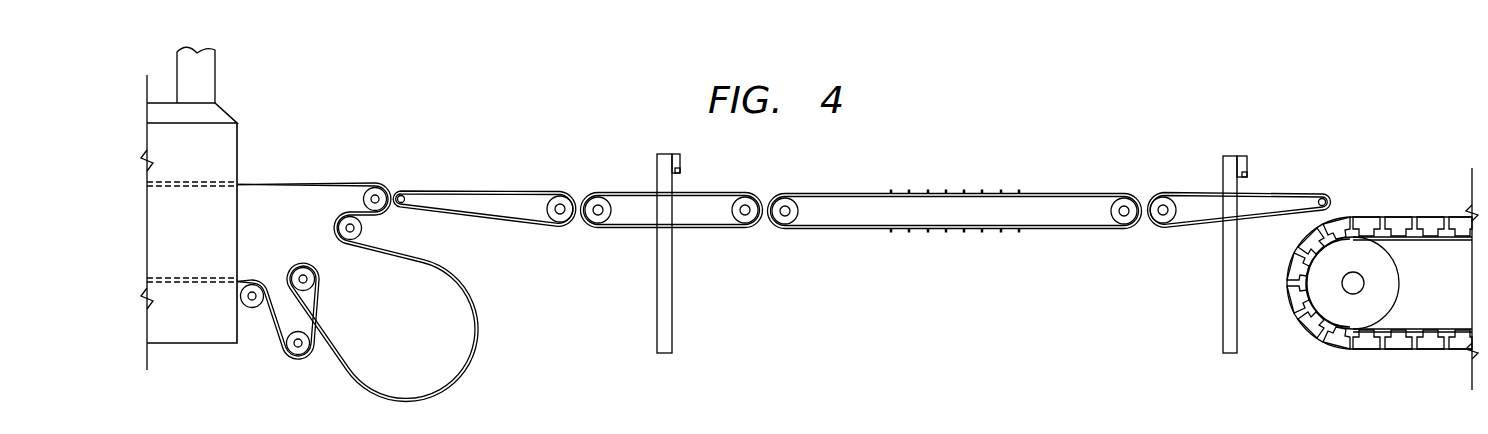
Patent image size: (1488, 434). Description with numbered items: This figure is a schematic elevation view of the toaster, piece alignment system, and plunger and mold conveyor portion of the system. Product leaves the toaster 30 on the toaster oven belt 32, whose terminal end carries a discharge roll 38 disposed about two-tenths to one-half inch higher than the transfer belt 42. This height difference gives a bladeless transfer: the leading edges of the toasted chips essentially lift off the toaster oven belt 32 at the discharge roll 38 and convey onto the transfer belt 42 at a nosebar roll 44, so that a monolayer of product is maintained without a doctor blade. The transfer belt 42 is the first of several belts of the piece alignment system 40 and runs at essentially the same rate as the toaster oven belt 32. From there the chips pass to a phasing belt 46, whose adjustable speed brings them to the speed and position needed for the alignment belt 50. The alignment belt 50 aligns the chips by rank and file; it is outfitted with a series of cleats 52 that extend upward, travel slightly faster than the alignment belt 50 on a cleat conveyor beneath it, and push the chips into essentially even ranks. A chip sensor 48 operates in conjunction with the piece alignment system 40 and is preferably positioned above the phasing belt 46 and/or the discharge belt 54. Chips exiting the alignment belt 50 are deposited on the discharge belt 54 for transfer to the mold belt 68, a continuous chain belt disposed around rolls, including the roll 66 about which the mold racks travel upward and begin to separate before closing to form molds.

The toaster 30 is at (238, 126).
The toaster oven belt 32 is at (323, 181).
The discharge roll 38 is at (363, 200).
The piece alignment system 40 is at (1354, 131).
The transfer belt 42 is at (497, 189).
The nosebar roll 44 is at (400, 194).
The phasing belt 46 is at (713, 219).
The chip sensor 48 is at (682, 161).
The alignment belt 50 is at (833, 193).
The cleats 52 is at (947, 190).
The discharge belt 54 is at (1192, 192).
The roll 66 is at (1392, 262).
The mold belt 68 is at (1418, 327).